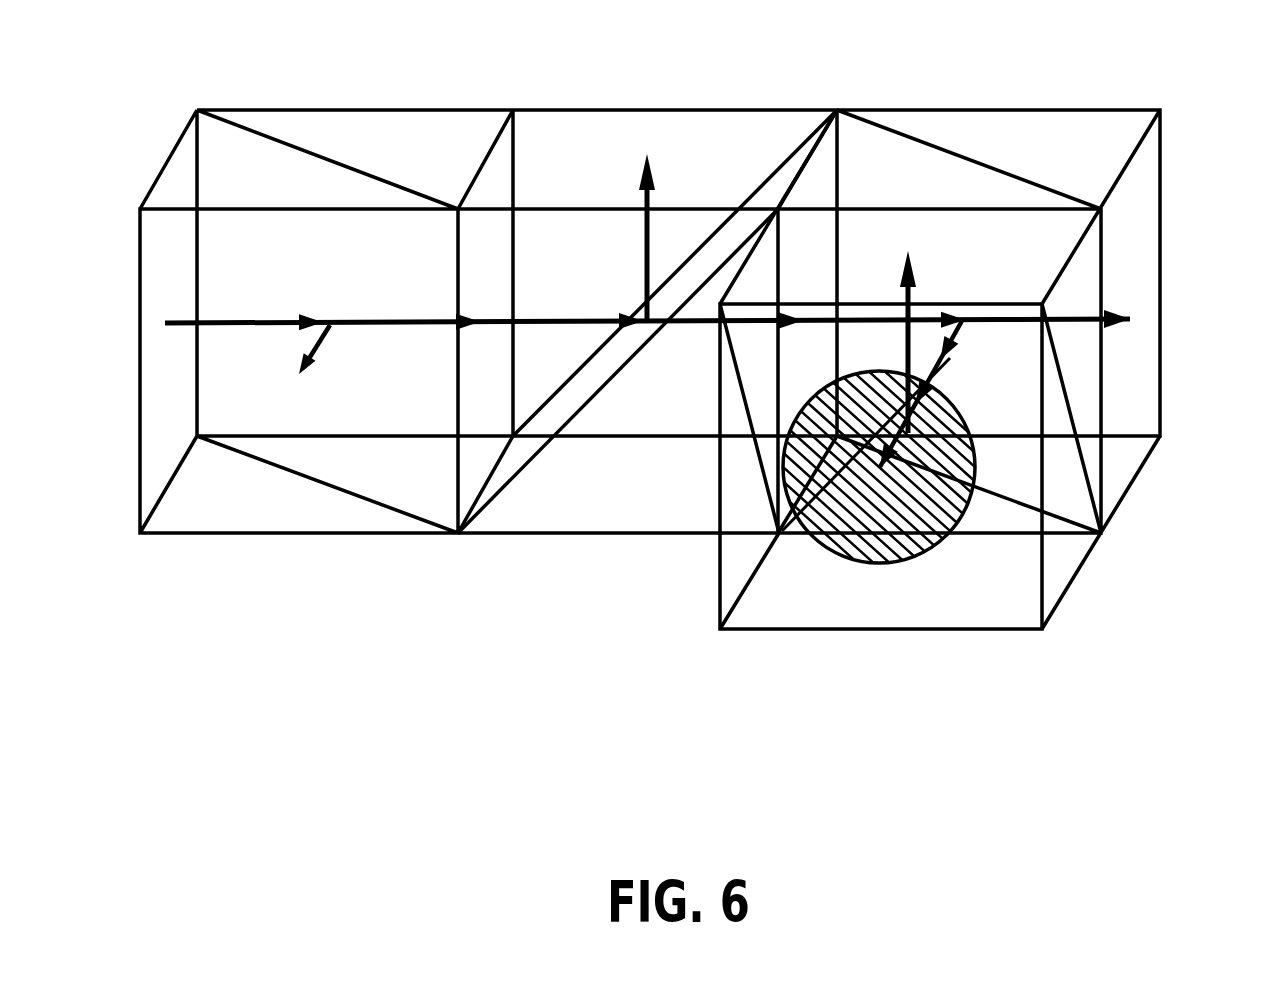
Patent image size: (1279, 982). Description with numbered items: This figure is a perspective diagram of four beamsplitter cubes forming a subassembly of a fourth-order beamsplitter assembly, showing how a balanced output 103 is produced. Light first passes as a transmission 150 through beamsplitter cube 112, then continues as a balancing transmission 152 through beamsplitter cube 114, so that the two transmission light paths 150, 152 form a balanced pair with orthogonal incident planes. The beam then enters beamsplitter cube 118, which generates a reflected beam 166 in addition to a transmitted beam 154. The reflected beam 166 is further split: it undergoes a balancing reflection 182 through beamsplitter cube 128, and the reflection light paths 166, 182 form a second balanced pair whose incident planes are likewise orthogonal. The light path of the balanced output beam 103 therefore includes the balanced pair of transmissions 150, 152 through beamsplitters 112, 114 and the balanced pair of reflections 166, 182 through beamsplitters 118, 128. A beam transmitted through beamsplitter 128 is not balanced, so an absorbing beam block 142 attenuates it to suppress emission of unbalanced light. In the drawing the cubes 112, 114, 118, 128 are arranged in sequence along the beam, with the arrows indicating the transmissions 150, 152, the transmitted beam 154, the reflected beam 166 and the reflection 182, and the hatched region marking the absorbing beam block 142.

The beamsplitter cube 112 is at (190, 537).
The beamsplitter cube 114 is at (518, 535).
The beamsplitter cube 118 is at (1160, 195).
The beamsplitter cube 128 is at (1082, 563).
The transmission 150 is at (428, 322).
The balancing transmission 152 is at (690, 312).
The balanced output 103 is at (907, 253).
The transmitted beam 154 is at (1117, 312).
The absorbing beam block 142 is at (841, 558).
The balancing reflection 182 is at (920, 357).
The reflected beam 166 is at (957, 353).